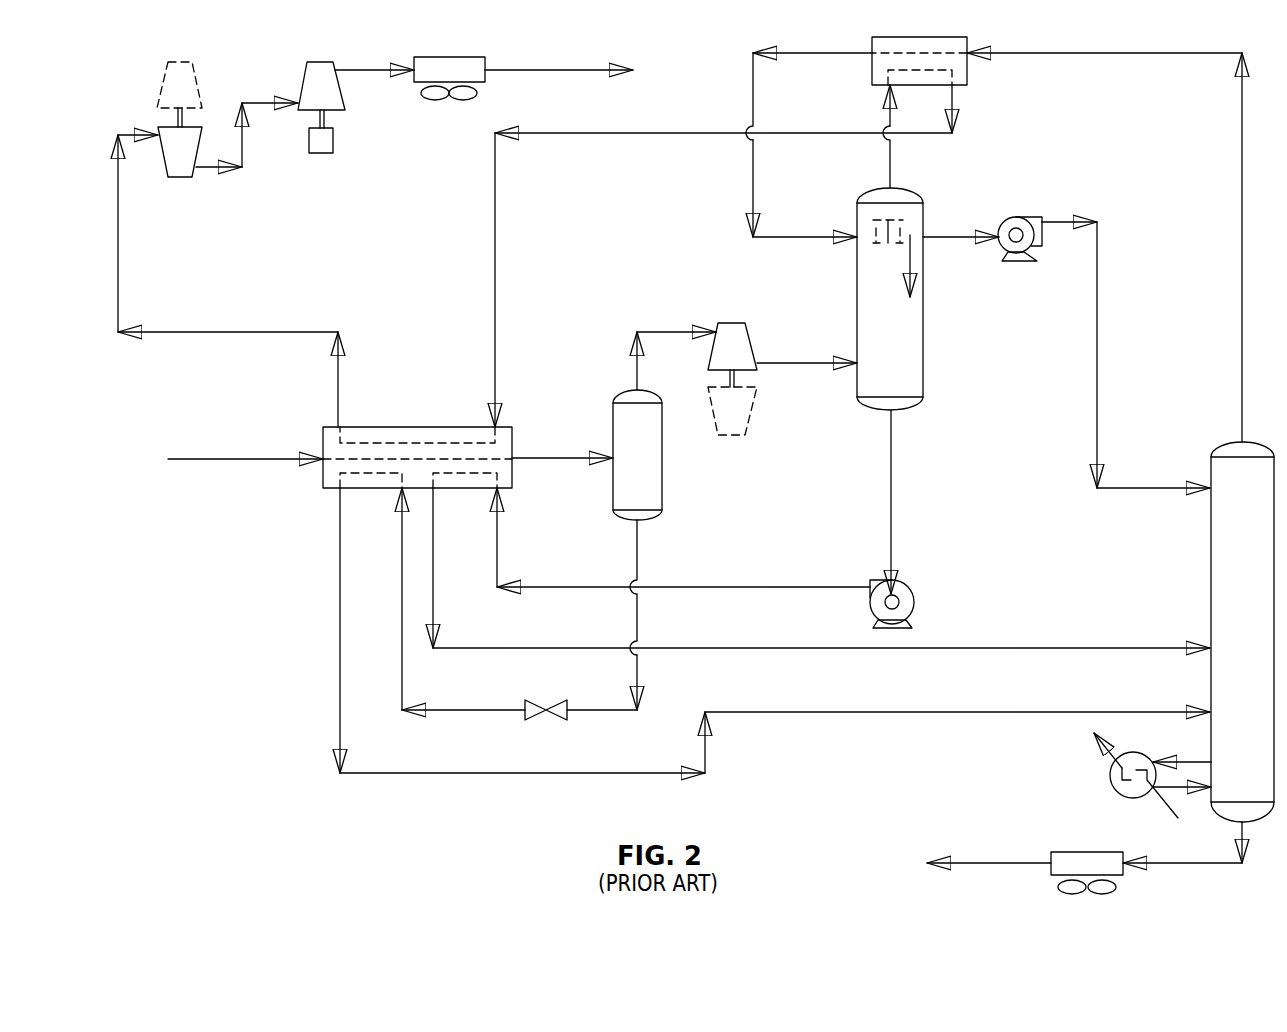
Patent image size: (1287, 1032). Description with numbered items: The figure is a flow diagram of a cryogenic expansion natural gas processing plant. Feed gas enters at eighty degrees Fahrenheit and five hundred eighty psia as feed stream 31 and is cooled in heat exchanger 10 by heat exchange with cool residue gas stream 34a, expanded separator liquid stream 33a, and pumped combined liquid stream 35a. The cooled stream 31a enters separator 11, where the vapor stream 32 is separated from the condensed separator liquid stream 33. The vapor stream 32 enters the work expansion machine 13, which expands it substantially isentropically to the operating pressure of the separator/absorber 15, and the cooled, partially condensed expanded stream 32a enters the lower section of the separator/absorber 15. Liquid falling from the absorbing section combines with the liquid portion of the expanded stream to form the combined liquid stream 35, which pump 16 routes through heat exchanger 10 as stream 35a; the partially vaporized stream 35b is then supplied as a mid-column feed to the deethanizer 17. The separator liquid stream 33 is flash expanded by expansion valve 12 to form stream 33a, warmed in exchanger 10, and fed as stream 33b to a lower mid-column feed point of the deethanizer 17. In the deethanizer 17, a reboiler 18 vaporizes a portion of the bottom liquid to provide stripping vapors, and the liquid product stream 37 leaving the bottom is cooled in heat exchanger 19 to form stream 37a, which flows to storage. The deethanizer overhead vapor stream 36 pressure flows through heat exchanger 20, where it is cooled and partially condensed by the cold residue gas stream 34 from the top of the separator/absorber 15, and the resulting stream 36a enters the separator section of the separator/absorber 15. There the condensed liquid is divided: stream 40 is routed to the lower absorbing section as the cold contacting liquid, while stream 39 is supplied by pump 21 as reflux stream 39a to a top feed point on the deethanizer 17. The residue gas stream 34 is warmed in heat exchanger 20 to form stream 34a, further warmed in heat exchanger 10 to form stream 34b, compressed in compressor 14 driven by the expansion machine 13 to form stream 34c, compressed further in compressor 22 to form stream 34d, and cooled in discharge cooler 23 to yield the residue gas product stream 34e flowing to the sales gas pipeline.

The heat exchanger 10 is at (418, 427).
The separator 11 is at (662, 490).
The expansion valve 12 is at (534, 700).
The work expansion machine 13 is at (180, 62).
The compressor 14 is at (180, 180).
The separator/absorber 15 is at (923, 332).
The pump 16 is at (913, 615).
The deethanizer 17 is at (1210, 588).
The reboiler 18 is at (1110, 777).
The heat exchanger 19 is at (1087, 852).
The heat exchanger 20 is at (872, 70).
The pump 21 is at (1003, 259).
The compressor 22 is at (320, 62).
The discharge cooler 23 is at (449, 57).
The feed stream 31 is at (182, 459).
The cooled stream 31a is at (560, 460).
The vapor stream 32 is at (668, 334).
The expanded stream 32a is at (803, 365).
The separator liquid stream 33 is at (639, 554).
The expanded separator liquid stream 33a is at (475, 712).
The heated separator liquid stream 33b is at (990, 714).
The cold residue gas stream 34 is at (892, 167).
The warmed residue gas stream 34a is at (635, 135).
The further warmed residue gas stream 34b is at (212, 334).
The partially compressed residue gas stream 34c is at (243, 136).
The compressed residue gas stream 34d is at (367, 70).
The residue gas product stream 34e is at (598, 70).
The combined liquid stream 35 is at (893, 491).
The pumped combined liquid stream 35a is at (767, 589).
The heated combined liquid stream 35b is at (1085, 650).
The deethanizer overhead vapor stream 36 is at (1108, 55).
The cooled deethanizer overhead stream 36a is at (803, 239).
The liquid product stream 37 is at (1198, 865).
The cooled liquid product stream 37a is at (992, 865).
The reflux liquid stream 39 is at (952, 237).
The reflux stream 39a is at (1147, 490).
The cold liquid stream 40 is at (908, 265).